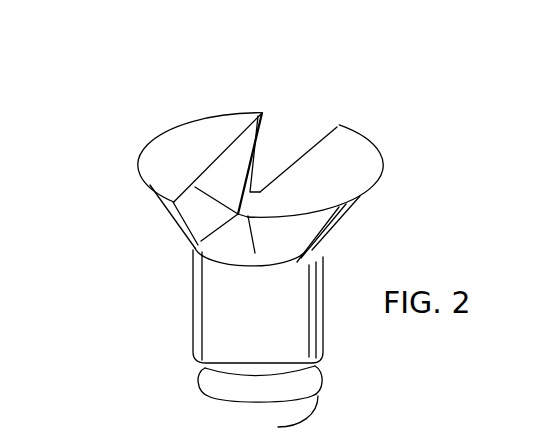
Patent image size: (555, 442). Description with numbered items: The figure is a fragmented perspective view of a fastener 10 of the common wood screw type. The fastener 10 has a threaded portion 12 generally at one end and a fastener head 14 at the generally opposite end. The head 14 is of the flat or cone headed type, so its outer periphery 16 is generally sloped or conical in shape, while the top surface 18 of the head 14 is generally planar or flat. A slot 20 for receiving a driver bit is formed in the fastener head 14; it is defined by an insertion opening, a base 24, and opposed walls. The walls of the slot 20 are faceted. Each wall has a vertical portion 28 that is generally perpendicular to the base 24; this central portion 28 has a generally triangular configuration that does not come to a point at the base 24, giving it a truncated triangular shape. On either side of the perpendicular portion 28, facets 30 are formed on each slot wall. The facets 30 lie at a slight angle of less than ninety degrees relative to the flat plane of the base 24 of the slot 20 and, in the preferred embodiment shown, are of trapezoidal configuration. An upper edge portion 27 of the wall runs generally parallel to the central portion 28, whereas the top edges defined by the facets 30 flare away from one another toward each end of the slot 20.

The fastener 10 is at (128, 214).
The threaded portion 12 is at (318, 393).
The fastener head 14 is at (136, 137).
The outer periphery 16 is at (338, 226).
The top surface 18 is at (357, 143).
The slot 20 is at (303, 115).
The base 24 is at (230, 245).
The upper edge portion 27 is at (222, 441).
The vertical portion 28 is at (233, 167).
The facets 30 is at (253, 170).